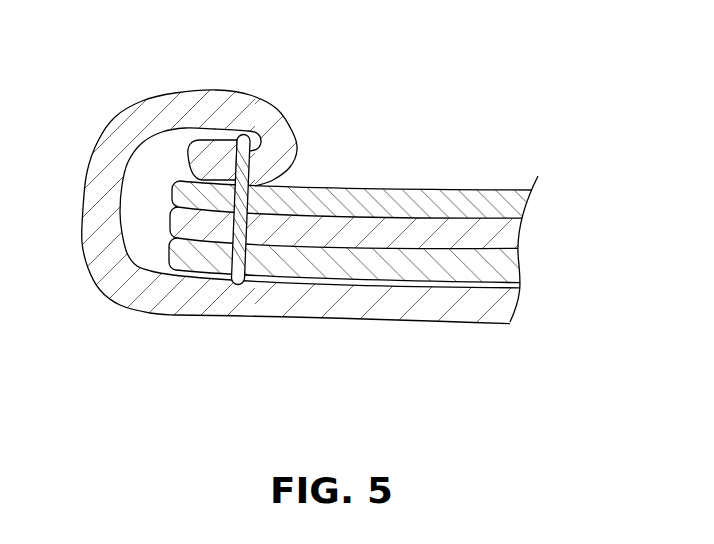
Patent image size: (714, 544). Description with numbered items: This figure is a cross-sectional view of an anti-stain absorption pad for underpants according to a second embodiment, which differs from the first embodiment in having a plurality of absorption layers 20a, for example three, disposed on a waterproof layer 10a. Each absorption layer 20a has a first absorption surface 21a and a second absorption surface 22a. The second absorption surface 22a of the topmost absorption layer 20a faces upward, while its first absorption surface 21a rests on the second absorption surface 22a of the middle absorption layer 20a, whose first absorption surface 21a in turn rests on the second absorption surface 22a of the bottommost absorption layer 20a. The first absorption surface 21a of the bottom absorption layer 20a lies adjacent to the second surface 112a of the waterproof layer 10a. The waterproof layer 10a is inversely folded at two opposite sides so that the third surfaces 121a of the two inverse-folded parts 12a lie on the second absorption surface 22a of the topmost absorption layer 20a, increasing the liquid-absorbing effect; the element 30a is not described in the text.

The waterproof layer 10a is at (470, 326).
The second surface of the waterproof layer 112a is at (520, 283).
The inverse-folded part 12a is at (208, 155).
The third surface 121a is at (182, 203).
The absorption layer 20a is at (535, 205).
The first absorption surface 21a is at (380, 220).
The second absorption surface 22a is at (463, 248).
The retaining pin 30a is at (224, 266).